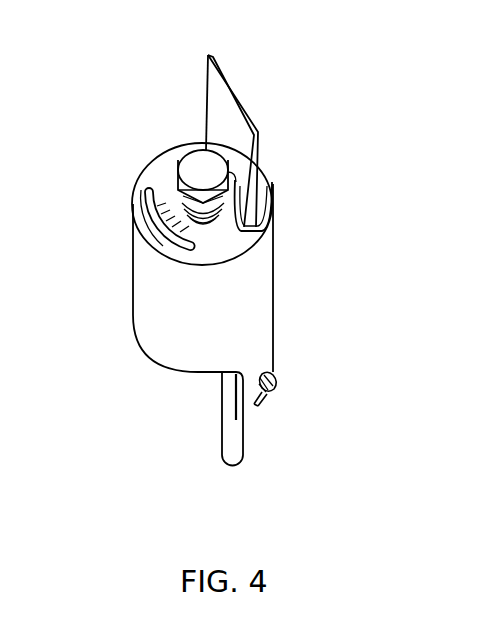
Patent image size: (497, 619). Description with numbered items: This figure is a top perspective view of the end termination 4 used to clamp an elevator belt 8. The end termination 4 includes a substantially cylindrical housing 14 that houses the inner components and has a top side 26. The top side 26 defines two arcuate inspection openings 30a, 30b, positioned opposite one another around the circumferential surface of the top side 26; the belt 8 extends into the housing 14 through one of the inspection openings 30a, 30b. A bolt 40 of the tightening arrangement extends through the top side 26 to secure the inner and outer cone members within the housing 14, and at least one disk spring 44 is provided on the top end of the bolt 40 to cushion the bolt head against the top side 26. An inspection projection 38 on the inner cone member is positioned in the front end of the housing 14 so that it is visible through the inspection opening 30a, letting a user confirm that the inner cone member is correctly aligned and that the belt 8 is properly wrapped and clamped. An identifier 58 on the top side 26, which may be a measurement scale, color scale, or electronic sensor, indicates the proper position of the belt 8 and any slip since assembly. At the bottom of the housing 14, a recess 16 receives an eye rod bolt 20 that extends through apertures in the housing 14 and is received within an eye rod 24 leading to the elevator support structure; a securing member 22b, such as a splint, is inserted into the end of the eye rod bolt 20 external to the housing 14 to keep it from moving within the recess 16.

The end termination 4 is at (354, 215).
The belt 8 is at (227, 73).
The housing 14 is at (272, 268).
The recess 16 is at (200, 373).
The eye rod bolt 20 is at (265, 398).
The securing member 22b is at (276, 377).
The eye rod 24 is at (230, 448).
The top side 26 is at (168, 168).
The inspection opening 30a is at (150, 233).
The inspection opening 30b is at (273, 183).
The inspection projection 38 is at (157, 204).
The bolt 40 is at (198, 172).
The disk spring 44 is at (212, 222).
The identifier 58 is at (167, 197).